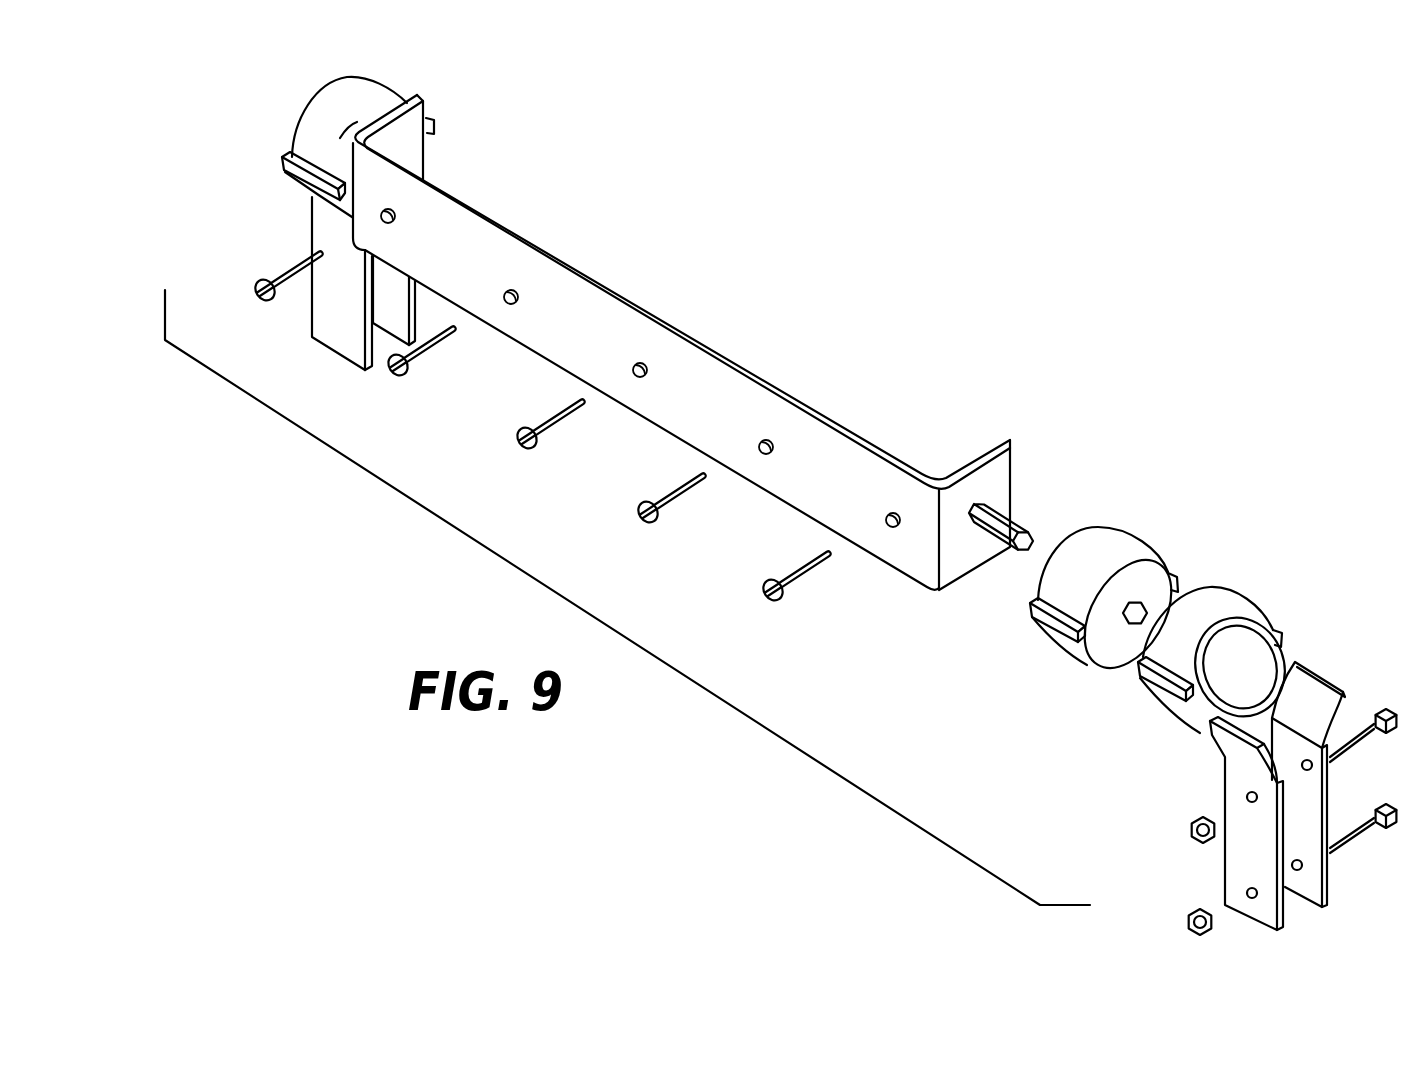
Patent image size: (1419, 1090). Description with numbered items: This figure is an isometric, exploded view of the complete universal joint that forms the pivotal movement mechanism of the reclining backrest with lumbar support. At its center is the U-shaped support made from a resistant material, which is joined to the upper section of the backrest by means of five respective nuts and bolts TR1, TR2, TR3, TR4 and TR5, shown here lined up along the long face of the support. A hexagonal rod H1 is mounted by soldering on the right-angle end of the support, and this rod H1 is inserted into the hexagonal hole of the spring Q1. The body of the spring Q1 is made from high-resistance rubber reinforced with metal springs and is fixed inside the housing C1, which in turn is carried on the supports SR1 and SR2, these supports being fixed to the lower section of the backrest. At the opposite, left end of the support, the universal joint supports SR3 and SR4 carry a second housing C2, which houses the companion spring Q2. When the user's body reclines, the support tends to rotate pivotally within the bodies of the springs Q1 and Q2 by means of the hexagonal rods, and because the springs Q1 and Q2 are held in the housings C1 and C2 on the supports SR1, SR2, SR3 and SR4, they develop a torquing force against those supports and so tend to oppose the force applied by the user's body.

The housing C2 is at (377, 95).
The spring Q2 is at (303, 182).
The universal joint support SR3 is at (342, 283).
The universal joint support SR4 is at (390, 307).
The nut and bolt TR1 is at (265, 283).
The nut and bolt TR2 is at (413, 363).
The nut and bolt TR3 is at (538, 437).
The nut and bolt TR4 is at (656, 510).
The nut and bolt TR5 is at (788, 589).
The hexagonal rod H1 is at (1007, 523).
The spring Q1 is at (1103, 552).
The housing C1 is at (1218, 603).
The support SR1 is at (1250, 867).
The support SR2 is at (1303, 880).